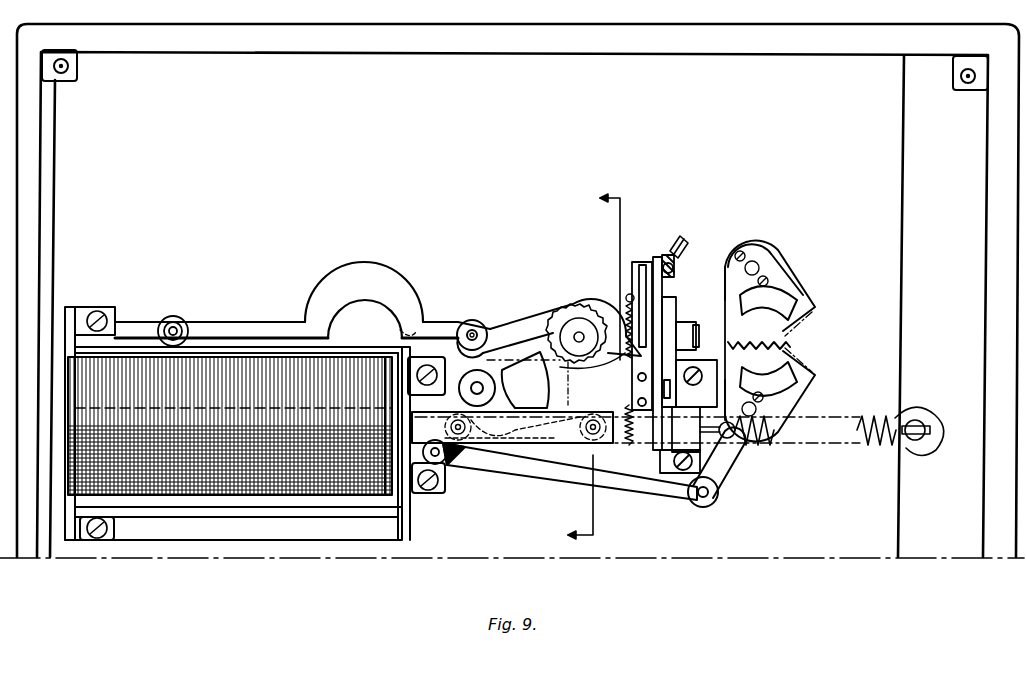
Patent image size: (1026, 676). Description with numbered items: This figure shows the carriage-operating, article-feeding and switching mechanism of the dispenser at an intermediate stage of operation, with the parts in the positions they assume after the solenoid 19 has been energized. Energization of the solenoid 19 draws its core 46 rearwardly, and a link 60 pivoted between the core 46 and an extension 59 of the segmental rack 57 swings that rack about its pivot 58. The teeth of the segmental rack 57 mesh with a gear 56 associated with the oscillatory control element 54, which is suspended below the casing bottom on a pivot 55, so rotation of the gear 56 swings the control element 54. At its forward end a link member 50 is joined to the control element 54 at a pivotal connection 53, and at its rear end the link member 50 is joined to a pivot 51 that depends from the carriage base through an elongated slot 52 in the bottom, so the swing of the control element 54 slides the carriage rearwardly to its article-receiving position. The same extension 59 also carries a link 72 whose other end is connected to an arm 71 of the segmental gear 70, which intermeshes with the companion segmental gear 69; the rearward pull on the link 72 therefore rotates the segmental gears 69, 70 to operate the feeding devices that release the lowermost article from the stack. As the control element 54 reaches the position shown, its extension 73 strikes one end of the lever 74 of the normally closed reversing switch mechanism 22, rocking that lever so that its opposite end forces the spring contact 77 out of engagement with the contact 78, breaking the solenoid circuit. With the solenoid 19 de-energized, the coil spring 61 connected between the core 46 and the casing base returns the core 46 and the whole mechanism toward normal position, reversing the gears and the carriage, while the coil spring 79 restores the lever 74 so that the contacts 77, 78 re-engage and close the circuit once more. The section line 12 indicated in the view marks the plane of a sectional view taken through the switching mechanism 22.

The section line 12- 12 is at (597, 367).
The solenoid 19 is at (295, 495).
The reversing switch mechanism 22 is at (656, 315).
The core 46 is at (513, 444).
The link member 50 is at (312, 310).
The pivot 51 is at (177, 318).
The elongated slot 52 is at (252, 322).
The pivotal connection 53 is at (473, 320).
The oscillatory control element 54 is at (514, 337).
The pivot 55 is at (581, 334).
The gear 56 is at (580, 352).
The segmental rack 57 is at (558, 384).
The pivot 58 is at (479, 384).
The extension 59 is at (456, 350).
The link 60 is at (487, 437).
The coil spring 61 is at (822, 437).
The segmental gear 69 is at (790, 281).
The segmental gear 70 is at (800, 390).
The arm 71 is at (725, 470).
The link 72 is at (639, 483).
The extension 73 is at (625, 366).
The lever 74 is at (673, 320).
The spring contact 77 is at (633, 262).
The contact 78 is at (669, 272).
The coil spring 79 is at (638, 297).